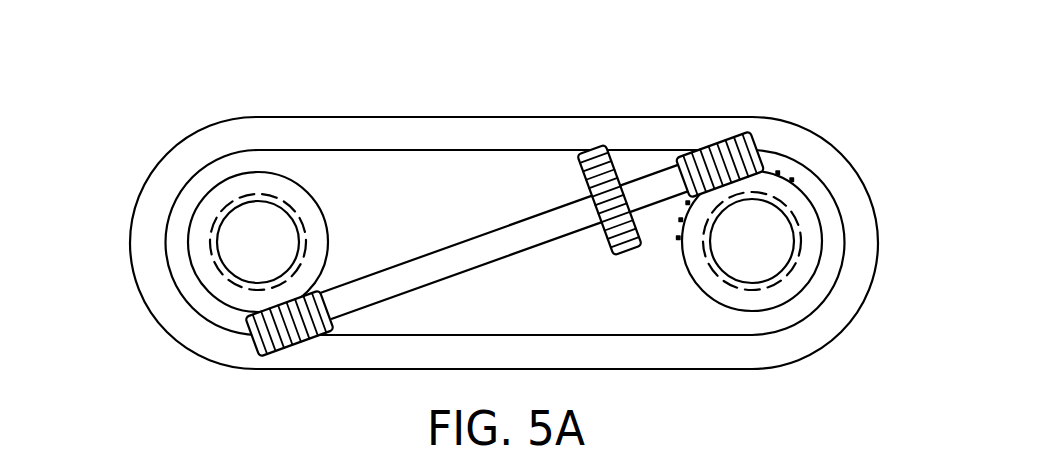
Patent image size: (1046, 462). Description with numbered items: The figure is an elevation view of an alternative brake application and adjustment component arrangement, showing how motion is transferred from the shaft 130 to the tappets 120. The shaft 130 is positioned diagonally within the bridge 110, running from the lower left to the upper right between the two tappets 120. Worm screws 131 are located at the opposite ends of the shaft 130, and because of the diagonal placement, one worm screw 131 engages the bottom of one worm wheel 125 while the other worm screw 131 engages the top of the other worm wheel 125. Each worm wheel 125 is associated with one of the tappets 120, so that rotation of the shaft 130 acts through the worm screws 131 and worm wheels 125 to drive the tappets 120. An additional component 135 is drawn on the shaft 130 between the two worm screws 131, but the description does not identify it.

The bridge 110 is at (303, 116).
The tappet 120 is at (228, 238).
The worm wheel 125 is at (187, 258).
The shaft 130 is at (508, 225).
The worm screw 131 is at (250, 340).
The tensioner roller 135 is at (591, 150).